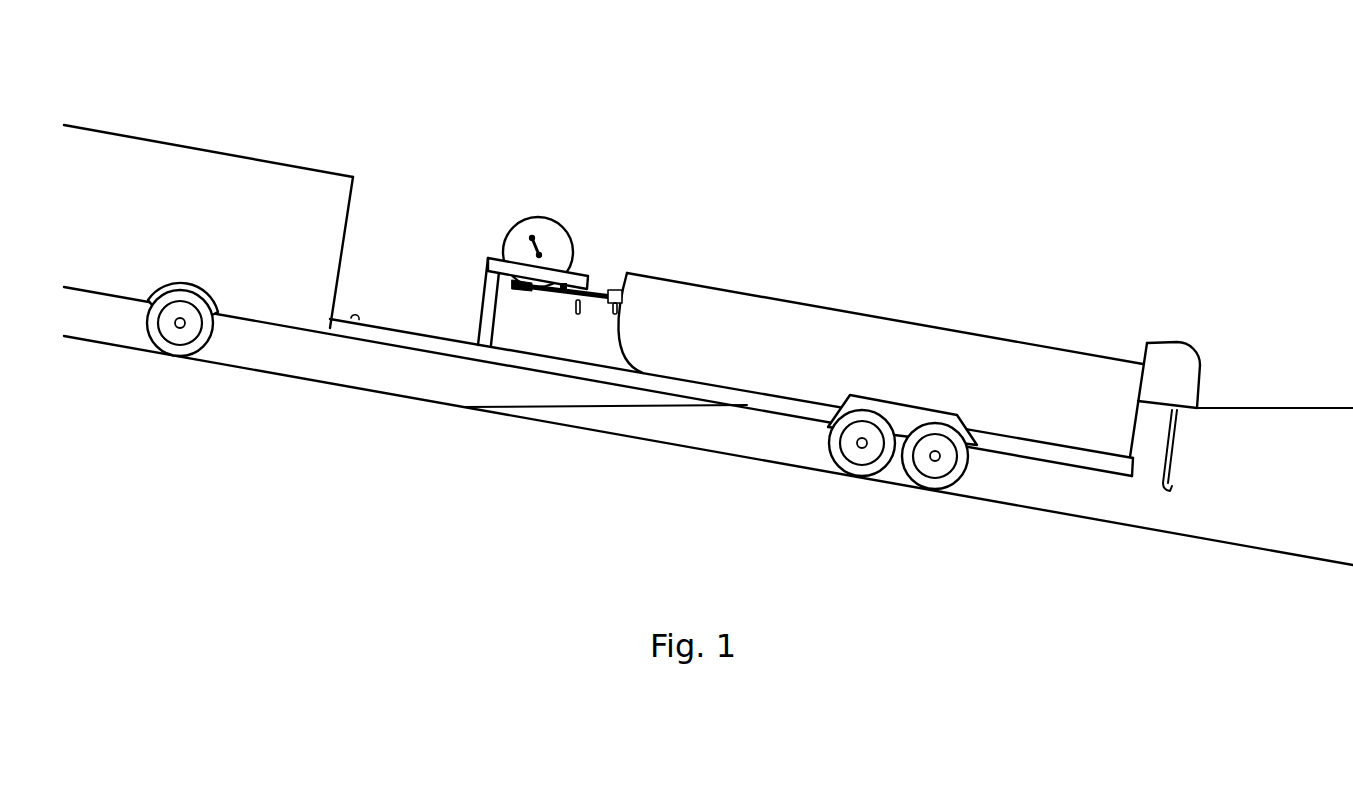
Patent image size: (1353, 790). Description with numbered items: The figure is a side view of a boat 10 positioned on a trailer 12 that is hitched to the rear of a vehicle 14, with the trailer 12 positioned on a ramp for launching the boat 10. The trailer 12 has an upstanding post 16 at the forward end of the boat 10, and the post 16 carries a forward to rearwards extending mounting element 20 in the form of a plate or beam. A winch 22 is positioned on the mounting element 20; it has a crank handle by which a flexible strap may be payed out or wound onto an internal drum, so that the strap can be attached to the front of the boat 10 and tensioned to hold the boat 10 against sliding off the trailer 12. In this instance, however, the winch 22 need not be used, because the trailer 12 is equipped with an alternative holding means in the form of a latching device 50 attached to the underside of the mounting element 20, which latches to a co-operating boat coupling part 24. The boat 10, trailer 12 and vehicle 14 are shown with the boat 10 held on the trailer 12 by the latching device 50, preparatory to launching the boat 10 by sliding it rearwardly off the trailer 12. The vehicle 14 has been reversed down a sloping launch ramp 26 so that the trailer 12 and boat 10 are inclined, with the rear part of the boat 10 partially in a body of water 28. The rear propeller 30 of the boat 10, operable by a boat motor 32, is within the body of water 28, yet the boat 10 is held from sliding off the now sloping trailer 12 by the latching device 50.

The boat 10 is at (922, 322).
The trailer 12 is at (413, 348).
The vehicle 14 is at (204, 194).
The upstanding post 16 is at (490, 315).
The mounting element 20 is at (498, 266).
The winch 22 is at (523, 243).
The boat coupling part 24 is at (615, 288).
The sloping launch ramp 26 is at (737, 457).
The body of water 28 is at (908, 453).
The rear propeller 30 is at (1170, 490).
The boat motor 32 is at (1172, 367).
The latching device 50 is at (545, 295).